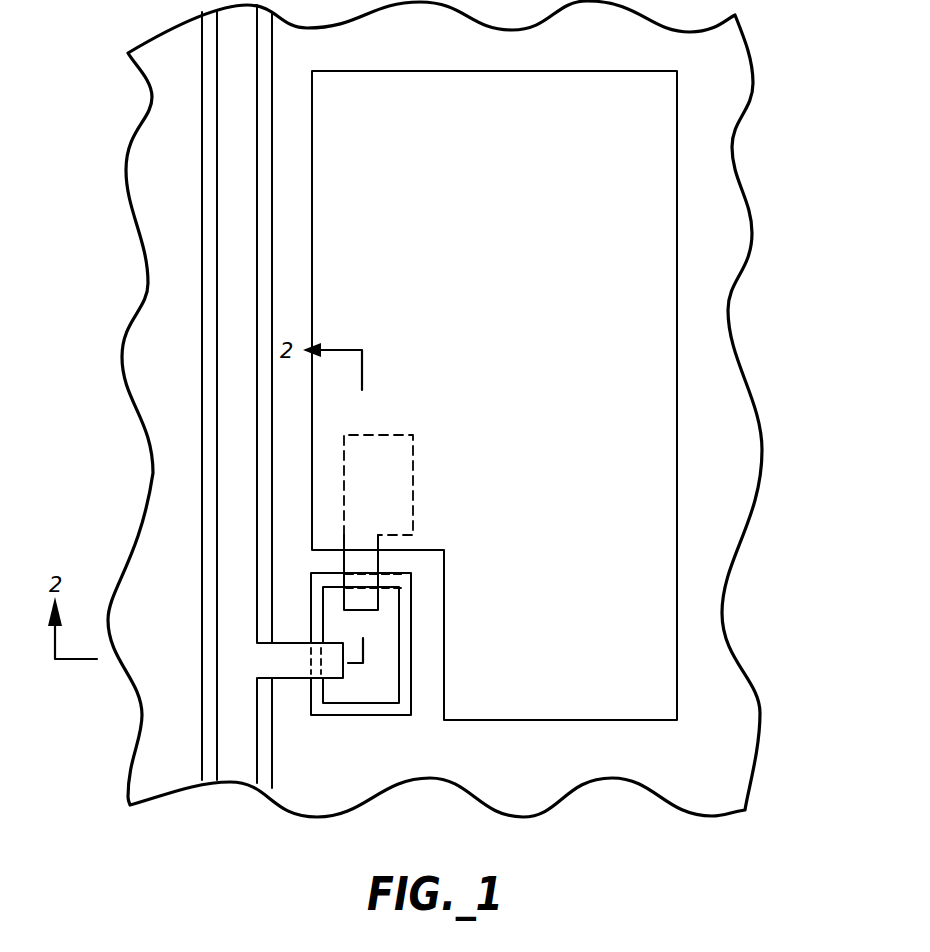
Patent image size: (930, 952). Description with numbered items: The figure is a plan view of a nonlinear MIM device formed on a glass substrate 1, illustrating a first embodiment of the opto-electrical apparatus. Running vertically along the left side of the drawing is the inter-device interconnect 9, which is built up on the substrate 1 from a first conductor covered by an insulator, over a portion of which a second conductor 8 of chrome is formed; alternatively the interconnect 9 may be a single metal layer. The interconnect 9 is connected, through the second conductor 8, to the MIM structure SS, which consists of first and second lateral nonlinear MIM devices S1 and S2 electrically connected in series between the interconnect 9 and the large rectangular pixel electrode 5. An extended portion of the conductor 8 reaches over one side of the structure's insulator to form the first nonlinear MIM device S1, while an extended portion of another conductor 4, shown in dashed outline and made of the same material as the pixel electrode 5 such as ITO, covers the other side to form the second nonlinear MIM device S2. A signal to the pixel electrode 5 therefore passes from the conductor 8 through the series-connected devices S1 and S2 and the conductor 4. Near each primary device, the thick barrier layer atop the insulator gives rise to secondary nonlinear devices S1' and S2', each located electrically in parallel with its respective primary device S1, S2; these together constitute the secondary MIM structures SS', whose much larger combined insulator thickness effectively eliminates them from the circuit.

The substrate 1 is at (722, 180).
The second conductor 4 is at (398, 432).
The pixel electrode 5 is at (657, 292).
The second conductor 8 is at (233, 322).
The inter-device interconnect 9 is at (200, 220).
The first nonlinear MIM device S1 is at (284, 735).
The secondary nonlinear device S1' is at (302, 750).
The second nonlinear MIM device S2 is at (418, 565).
The secondary nonlinear device S2' is at (422, 580).
The MIM structure SS is at (280, 583).
The secondary MIM structures SS' is at (403, 644).